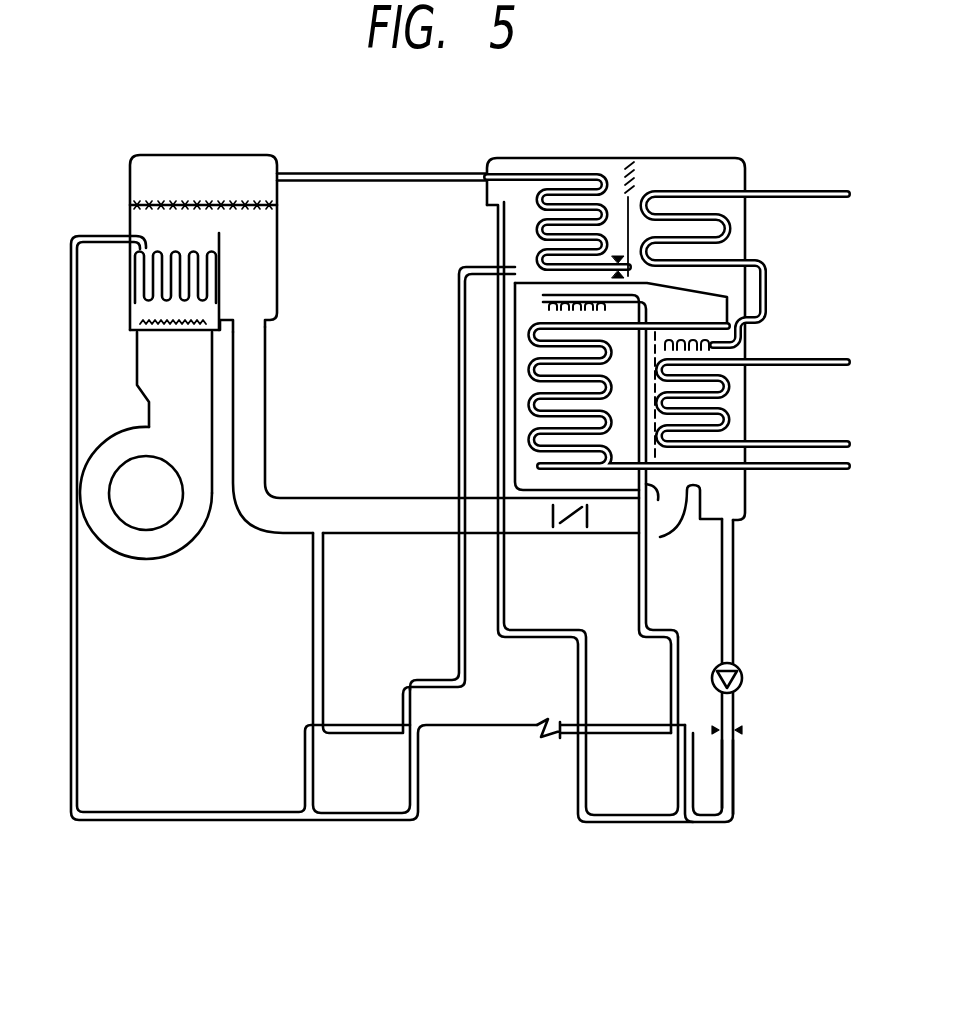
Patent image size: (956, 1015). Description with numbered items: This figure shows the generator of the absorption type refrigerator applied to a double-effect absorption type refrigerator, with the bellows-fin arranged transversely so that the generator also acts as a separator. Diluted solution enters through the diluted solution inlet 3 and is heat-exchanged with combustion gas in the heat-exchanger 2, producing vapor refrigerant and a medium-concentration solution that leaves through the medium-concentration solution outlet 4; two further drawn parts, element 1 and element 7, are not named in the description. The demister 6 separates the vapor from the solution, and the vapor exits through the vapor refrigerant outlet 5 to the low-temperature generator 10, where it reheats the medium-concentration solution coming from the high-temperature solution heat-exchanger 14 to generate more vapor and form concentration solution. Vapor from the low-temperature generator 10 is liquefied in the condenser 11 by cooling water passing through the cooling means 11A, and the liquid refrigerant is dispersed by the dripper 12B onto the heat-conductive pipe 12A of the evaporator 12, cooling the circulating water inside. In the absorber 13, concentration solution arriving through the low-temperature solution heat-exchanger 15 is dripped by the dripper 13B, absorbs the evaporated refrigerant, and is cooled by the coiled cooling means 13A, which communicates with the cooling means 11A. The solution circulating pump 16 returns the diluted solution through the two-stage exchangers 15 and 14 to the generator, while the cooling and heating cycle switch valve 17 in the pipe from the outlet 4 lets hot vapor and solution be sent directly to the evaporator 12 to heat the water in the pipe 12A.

The blower 1 is at (137, 372).
The heat-exchanger 2 is at (140, 277).
The diluted solution inlet 3 is at (83, 236).
The medium-concentration solution outlet 4 is at (267, 371).
The vapor refrigerant outlet 5 is at (343, 173).
The demister 6 is at (178, 205).
The air handling casing 7 is at (247, 155).
The low-temperature generator 10 is at (560, 185).
The condenser 11 is at (713, 172).
The cooling means 11A is at (717, 217).
The evaporator 12 is at (737, 393).
The heat-conductive pipe 12A is at (720, 424).
The dripper 12B is at (727, 345).
The absorber 13 is at (522, 379).
The cooling means 13A is at (535, 430).
The dripper 13B is at (547, 300).
The high-temperature solution heat-exchanger 14 is at (370, 808).
The low-temperature solution heat-exchanger 15 is at (635, 808).
The solution circulating pump 16 is at (745, 679).
The cooling and heating cycle switch valve 17 is at (572, 527).